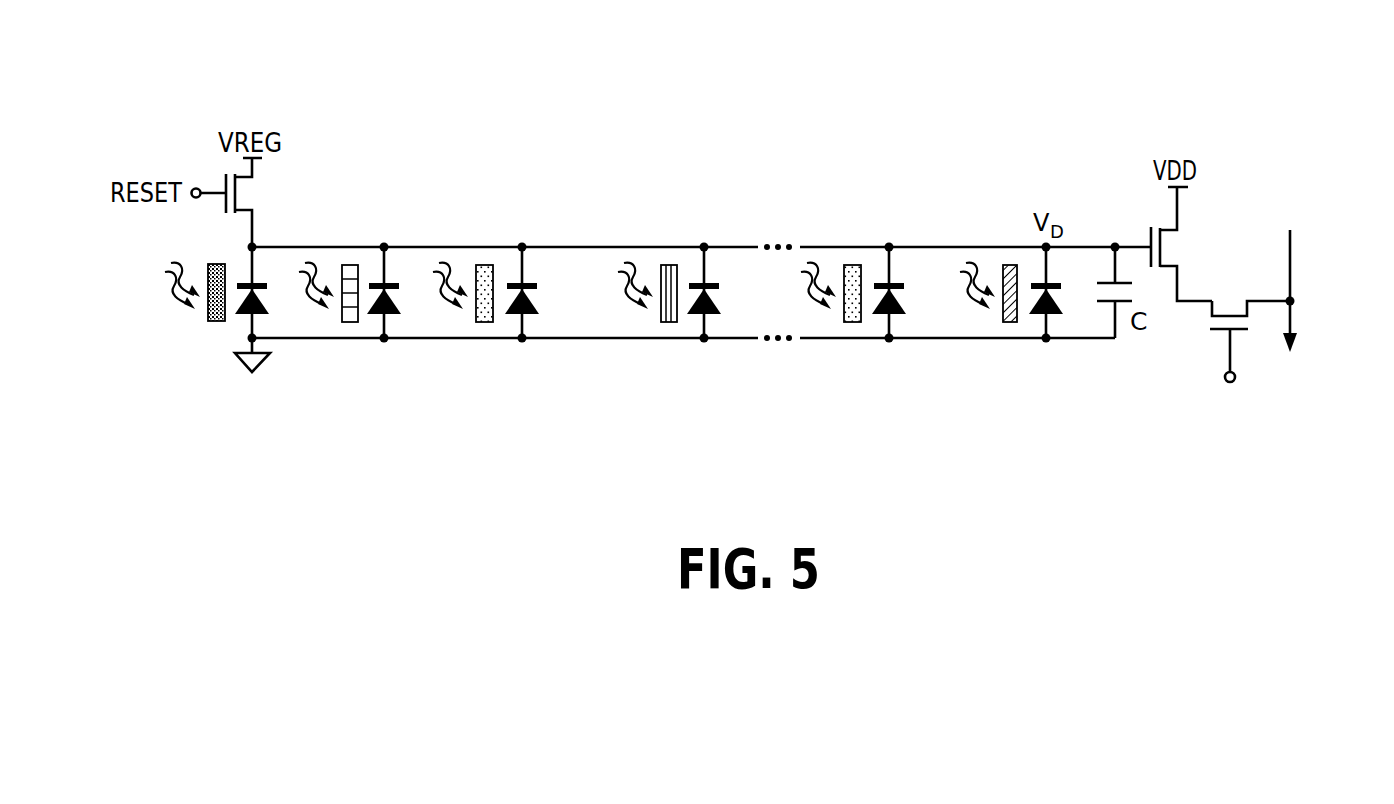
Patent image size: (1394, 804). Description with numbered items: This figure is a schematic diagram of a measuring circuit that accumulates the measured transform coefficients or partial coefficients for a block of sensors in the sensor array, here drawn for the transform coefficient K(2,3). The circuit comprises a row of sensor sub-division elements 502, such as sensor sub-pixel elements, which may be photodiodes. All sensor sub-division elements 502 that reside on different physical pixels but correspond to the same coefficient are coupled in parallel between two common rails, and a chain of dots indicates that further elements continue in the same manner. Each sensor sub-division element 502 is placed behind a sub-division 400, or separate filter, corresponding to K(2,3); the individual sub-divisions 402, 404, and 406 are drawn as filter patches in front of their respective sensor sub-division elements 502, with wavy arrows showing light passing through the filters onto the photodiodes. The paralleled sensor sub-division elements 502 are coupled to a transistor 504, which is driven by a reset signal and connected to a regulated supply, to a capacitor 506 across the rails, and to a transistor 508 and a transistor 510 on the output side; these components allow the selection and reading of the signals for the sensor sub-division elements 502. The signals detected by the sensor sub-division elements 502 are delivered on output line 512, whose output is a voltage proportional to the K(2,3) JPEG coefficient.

The sub-division 400 is at (350, 323).
The sub-division 402 is at (213, 322).
The sub-division 404 is at (663, 323).
The sub-division 406 is at (848, 323).
The sensor sub-division element 502 is at (270, 283).
The transistor 504 is at (283, 135).
The capacitor 506 is at (1120, 340).
The transistor 508 is at (1185, 238).
The transistor 510 is at (1246, 340).
The output line 512 is at (1305, 301).